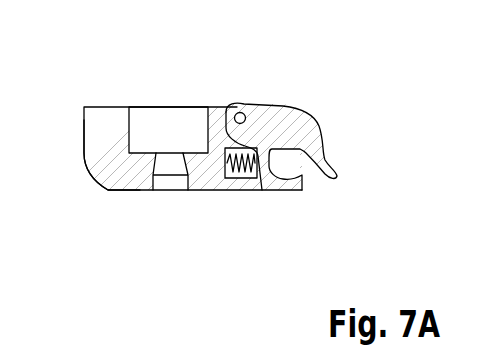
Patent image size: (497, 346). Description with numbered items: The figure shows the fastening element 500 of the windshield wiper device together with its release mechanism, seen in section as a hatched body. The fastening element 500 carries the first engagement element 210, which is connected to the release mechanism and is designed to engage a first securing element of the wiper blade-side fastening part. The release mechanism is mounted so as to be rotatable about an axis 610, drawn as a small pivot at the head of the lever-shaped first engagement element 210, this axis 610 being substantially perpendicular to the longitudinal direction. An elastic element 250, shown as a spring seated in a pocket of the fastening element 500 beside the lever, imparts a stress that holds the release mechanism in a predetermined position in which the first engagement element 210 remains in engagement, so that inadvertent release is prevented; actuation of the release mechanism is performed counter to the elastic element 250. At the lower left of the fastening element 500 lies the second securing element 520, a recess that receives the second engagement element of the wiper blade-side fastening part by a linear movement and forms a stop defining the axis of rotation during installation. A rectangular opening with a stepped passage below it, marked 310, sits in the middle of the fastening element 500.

The fastening element 500 is at (212, 203).
The second securing element 520 is at (96, 178).
The actuating element 310 is at (151, 118).
The first engagement element 210 is at (329, 172).
The axis 610 is at (238, 112).
The elastic element 250 is at (254, 168).